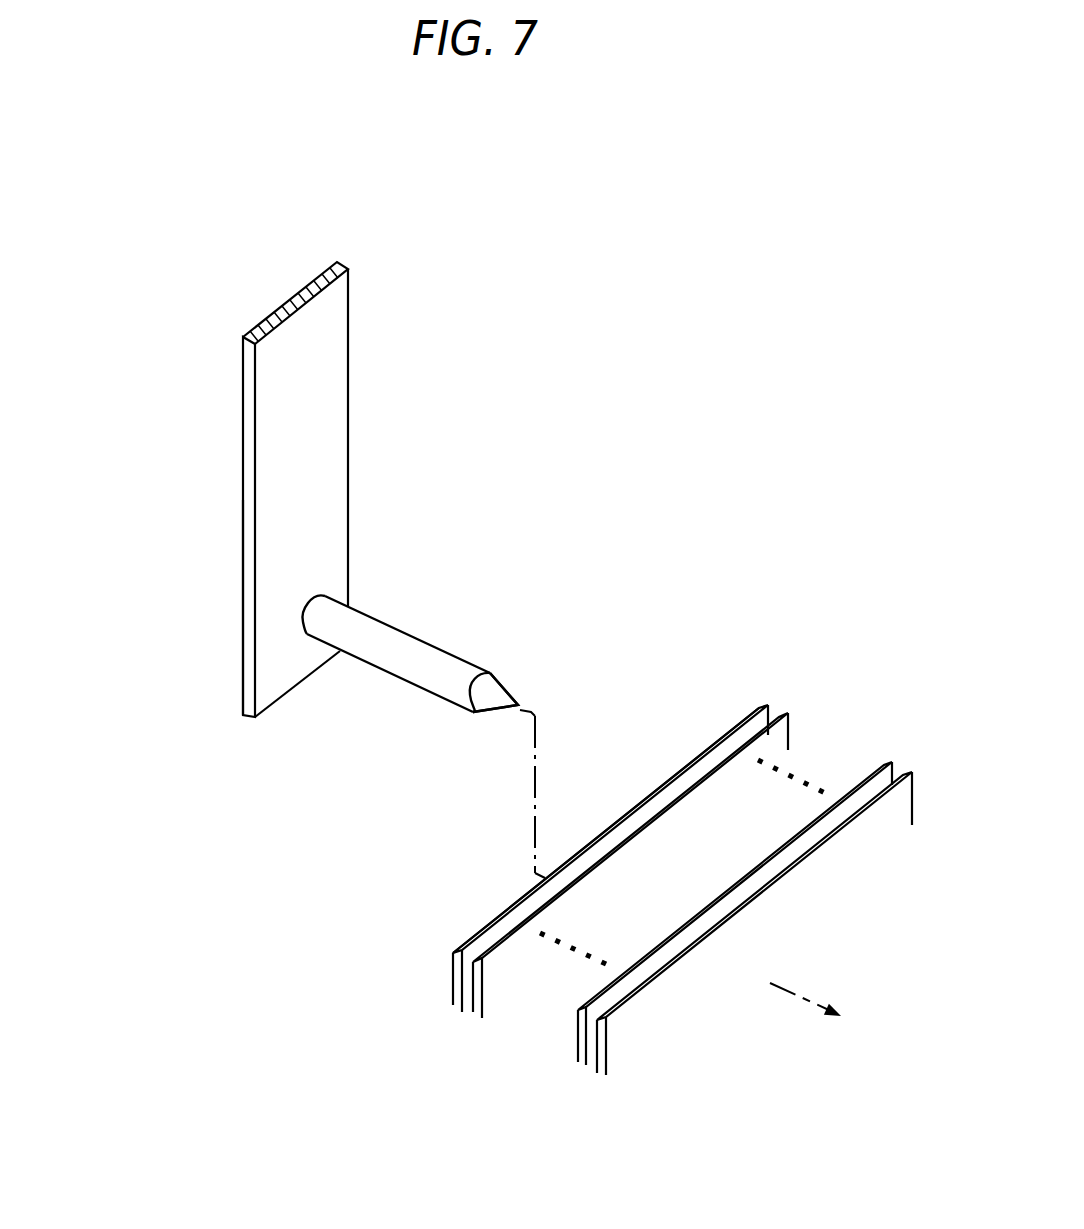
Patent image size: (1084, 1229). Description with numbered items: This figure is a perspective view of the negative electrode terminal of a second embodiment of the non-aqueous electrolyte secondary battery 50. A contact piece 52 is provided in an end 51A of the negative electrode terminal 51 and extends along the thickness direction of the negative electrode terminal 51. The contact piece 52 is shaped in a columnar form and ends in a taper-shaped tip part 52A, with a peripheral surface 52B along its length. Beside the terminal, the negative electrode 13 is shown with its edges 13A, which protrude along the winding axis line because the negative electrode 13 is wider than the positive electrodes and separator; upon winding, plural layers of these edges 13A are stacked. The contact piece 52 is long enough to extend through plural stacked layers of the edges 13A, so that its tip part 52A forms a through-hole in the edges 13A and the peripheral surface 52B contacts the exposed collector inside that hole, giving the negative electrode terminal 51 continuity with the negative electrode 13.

The non-aqueous electrolyte secondary battery 50 is at (206, 556).
The negative electrode terminal 51 is at (322, 468).
The end of the negative electrode terminal 51A is at (270, 661).
The contact piece 52 is at (440, 639).
The taper-shaped tip part 52A is at (507, 698).
The peripheral surface of the contact piece 52B is at (395, 660).
The negative electrode 13 is at (820, 872).
The edge of the negative electrode 13A is at (686, 758).